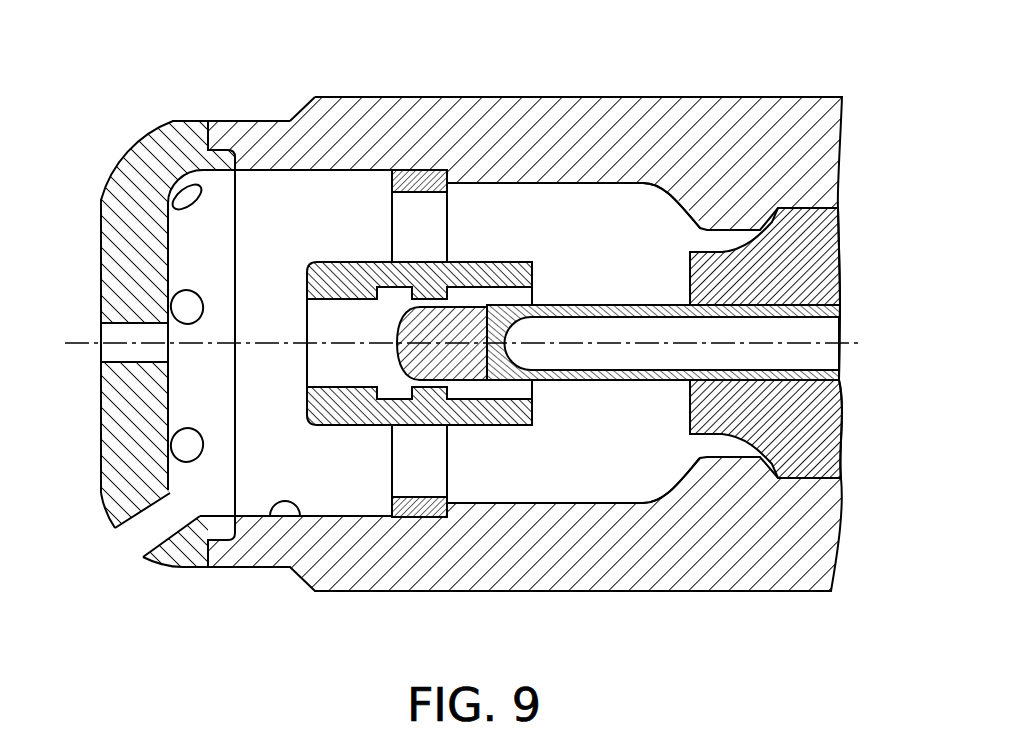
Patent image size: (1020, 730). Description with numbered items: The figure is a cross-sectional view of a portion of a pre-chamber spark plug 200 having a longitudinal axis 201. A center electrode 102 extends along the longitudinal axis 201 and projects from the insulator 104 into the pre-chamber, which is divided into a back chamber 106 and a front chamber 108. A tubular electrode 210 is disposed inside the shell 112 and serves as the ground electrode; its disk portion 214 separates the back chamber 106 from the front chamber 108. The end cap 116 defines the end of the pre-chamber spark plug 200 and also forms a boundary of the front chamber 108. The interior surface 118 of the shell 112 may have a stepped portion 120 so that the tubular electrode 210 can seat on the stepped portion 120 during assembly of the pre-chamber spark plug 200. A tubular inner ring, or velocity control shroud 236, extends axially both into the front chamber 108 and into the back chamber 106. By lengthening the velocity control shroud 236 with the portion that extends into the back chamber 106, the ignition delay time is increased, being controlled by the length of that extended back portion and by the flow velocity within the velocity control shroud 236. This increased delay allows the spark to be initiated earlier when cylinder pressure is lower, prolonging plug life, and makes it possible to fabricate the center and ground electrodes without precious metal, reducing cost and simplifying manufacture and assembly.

The pre-chamber spark plug 200 is at (792, 64).
The shell 112 is at (390, 97).
The end cap 116 is at (100, 213).
The interior surface 118 is at (278, 512).
The front chamber 108 is at (283, 197).
The disk portion 214 is at (447, 172).
The tubular electrode 210 is at (413, 518).
The velocity control shroud 236 is at (310, 417).
The center electrode 102 is at (447, 377).
The insulator 104 is at (730, 250).
The back chamber 106 is at (580, 202).
The stepped portion 120 is at (452, 183).
The longitudinal axis 201 is at (80, 342).